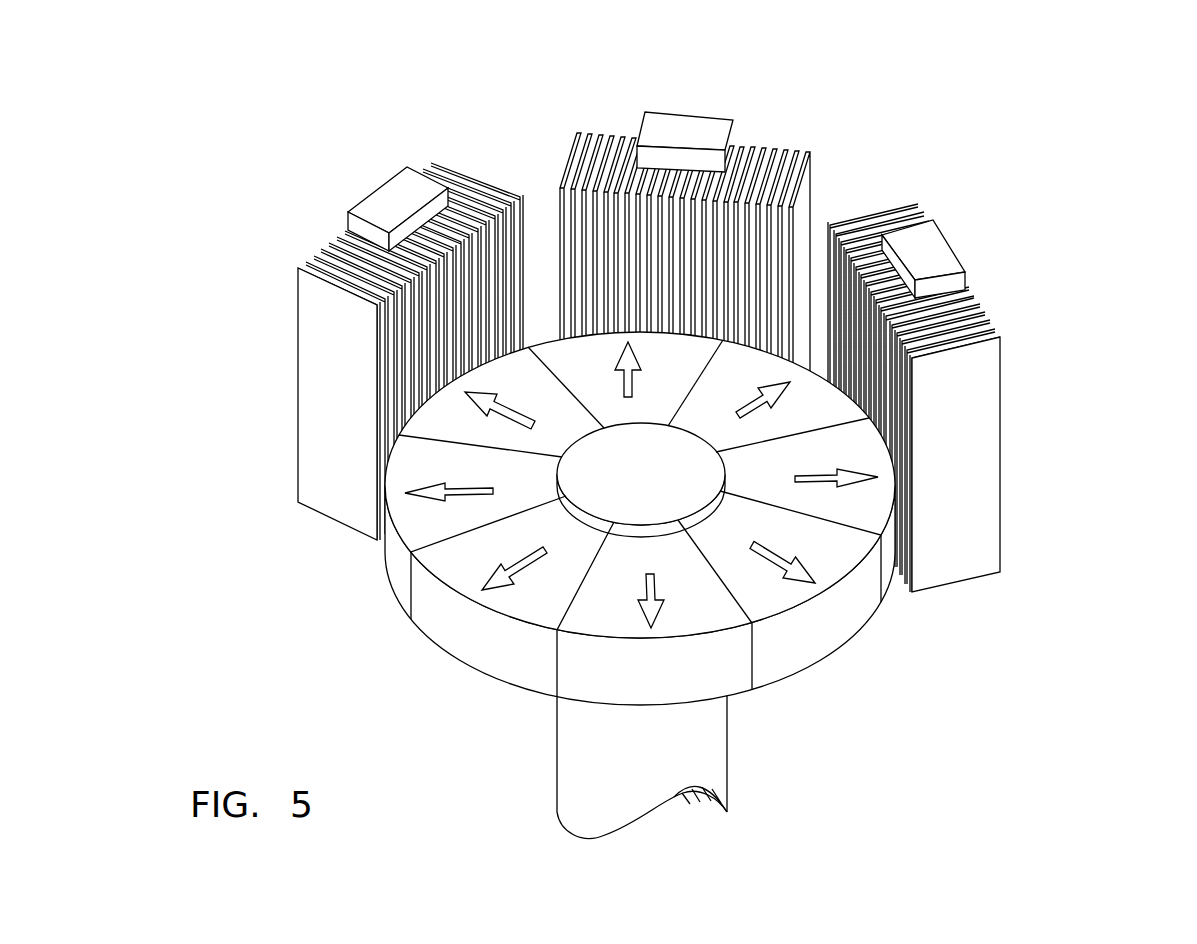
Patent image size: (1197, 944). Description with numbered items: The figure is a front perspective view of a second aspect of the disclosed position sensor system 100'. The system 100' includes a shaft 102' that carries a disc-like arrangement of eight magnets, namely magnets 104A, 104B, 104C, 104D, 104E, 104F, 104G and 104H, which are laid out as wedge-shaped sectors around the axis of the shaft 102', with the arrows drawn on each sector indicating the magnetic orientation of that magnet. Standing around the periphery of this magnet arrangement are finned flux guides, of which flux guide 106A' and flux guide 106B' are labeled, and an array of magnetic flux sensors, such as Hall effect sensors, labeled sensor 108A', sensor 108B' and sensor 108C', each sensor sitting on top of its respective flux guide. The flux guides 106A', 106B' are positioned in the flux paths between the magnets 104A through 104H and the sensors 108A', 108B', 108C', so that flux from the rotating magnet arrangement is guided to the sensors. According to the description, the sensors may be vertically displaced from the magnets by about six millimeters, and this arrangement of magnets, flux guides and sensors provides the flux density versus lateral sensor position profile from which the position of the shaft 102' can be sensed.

The position sensor system 100' is at (788, 436).
The shaft 102' is at (723, 764).
The magnet 104A is at (437, 517).
The magnet 104B is at (470, 565).
The magnet 104C is at (615, 626).
The magnet 104D is at (782, 600).
The magnet 104E is at (863, 507).
The magnet 104F is at (810, 390).
The magnet 104G is at (572, 353).
The magnet 104H is at (510, 375).
The flux guide 106A' is at (358, 351).
The flux guide 106B' is at (699, 213).
The magnetic flux sensor 108A' is at (355, 187).
The magnetic flux sensor 108B' is at (687, 98).
The magnetic flux sensor 108C' is at (939, 365).